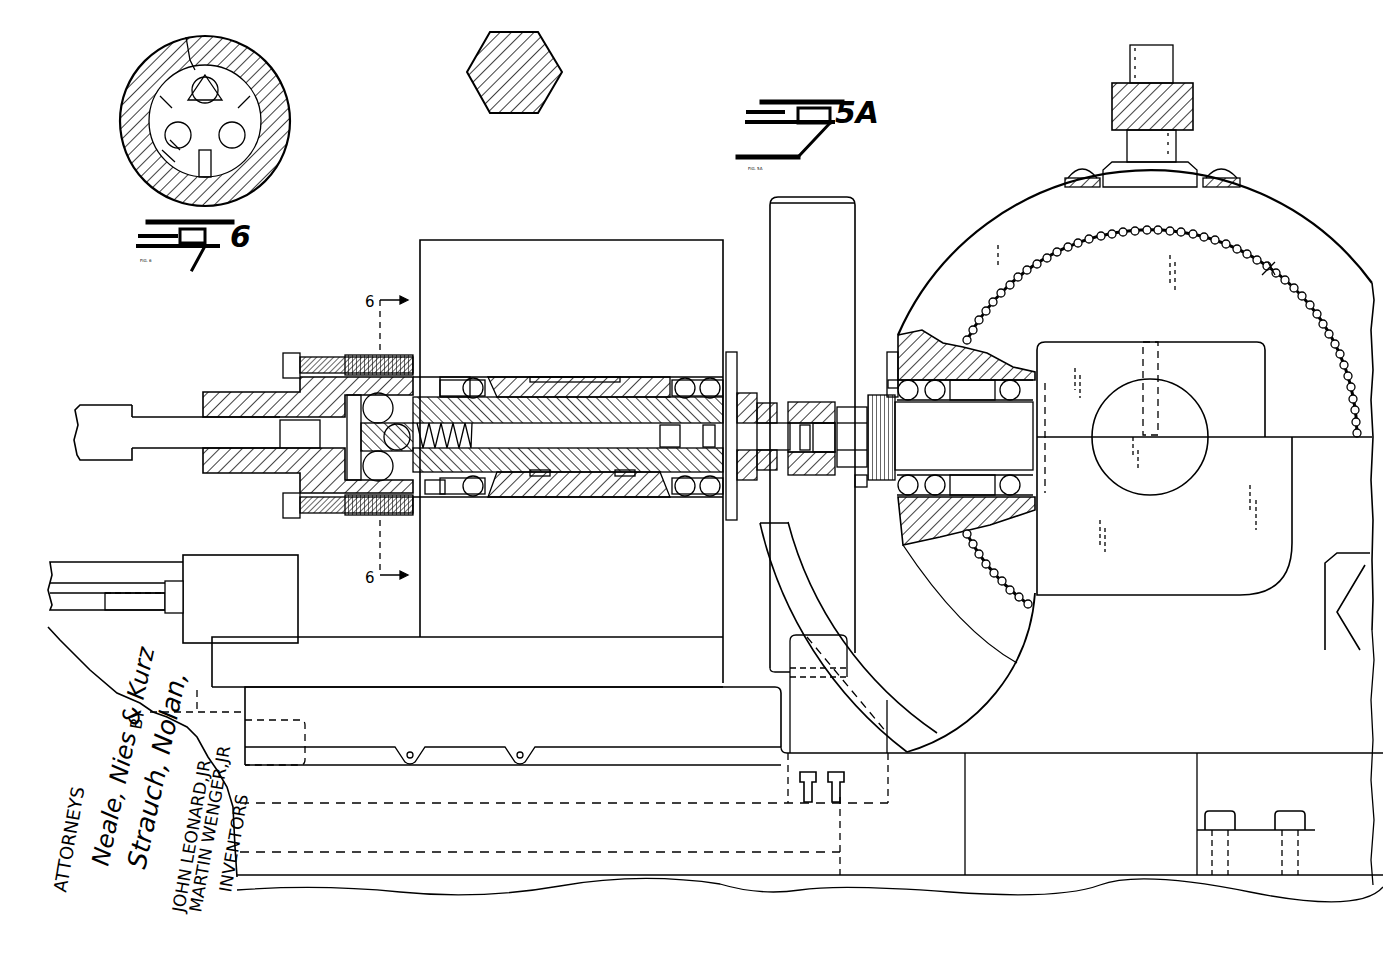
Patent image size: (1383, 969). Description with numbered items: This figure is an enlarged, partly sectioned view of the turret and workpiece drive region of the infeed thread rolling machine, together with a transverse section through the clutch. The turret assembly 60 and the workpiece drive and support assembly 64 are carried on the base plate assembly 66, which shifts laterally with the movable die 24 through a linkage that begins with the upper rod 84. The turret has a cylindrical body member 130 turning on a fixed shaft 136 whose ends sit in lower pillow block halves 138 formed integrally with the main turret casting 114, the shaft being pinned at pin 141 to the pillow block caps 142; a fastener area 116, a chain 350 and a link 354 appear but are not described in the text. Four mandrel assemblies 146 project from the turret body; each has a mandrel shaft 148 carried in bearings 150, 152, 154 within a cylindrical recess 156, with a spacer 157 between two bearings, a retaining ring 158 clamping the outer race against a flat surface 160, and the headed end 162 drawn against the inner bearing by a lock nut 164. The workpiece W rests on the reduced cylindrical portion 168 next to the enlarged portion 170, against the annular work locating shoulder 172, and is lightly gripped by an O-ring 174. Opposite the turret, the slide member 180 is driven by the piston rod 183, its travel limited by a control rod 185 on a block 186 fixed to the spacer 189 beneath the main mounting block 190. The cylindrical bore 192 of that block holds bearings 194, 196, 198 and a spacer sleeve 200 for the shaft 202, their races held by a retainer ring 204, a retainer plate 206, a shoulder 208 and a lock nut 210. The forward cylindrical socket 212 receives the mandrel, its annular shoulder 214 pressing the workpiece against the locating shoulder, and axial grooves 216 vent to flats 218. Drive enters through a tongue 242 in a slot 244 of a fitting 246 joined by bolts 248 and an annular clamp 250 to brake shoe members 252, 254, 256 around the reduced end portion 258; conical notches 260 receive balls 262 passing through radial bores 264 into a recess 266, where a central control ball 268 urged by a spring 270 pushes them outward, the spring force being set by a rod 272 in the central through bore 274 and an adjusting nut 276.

In FIG. 5A, the die 24 is at (843, 197).
In FIG. 5A, the turret assembly 60 is at (945, 265).
In FIG. 5A, the workpiece drive and support assembly 64 is at (480, 240).
In FIG. 5A, the base plate assembly 66 is at (598, 848).
In FIG. 5A, the upper rod 84 is at (548, 48).
In FIG. 5A, the main turret casting 114 is at (983, 706).
In FIG. 5A, the base fastener block 116 is at (1280, 812).
In FIG. 5A, the body member 130 is at (1010, 210).
In FIG. 5A, the fixed shaft 136 is at (1193, 408).
In FIG. 5A, the lower halves of pillow blocks 138 is at (1268, 445).
In FIG. 5A, the pin 141 is at (1158, 350).
In FIG. 5A, the pillow block caps 142 is at (1050, 342).
In FIG. 5A, the work supporting mandrel assemblies 146 is at (878, 395).
In FIG. 5A, the mandrel shaft 148 is at (964, 436).
In FIG. 5A, the outer bearing 150 is at (965, 437).
In FIG. 5A, the bearing 152 is at (948, 400).
In FIG. 5A, the inner bearing 154 is at (1005, 400).
In FIG. 5A, the cylindrical recess 156 is at (975, 515).
In FIG. 5A, the spacer 157 is at (983, 365).
In FIG. 5A, the retaining ring 158 is at (893, 380).
In FIG. 5A, the flat surface 160 is at (890, 352).
In FIG. 5A, the headed end 162 is at (1038, 490).
In FIG. 5A, the lock nut 164 is at (880, 500).
In FIG. 5A, the reduced cylindrical portion 168 is at (822, 478).
In FIG. 5A, the enlarged portion 170 is at (850, 407).
In FIG. 5A, the annular work locating shoulder 172 is at (852, 428).
In FIG. 5A, the O-ring 174 is at (852, 444).
In FIG. 5A, the slide member 180 is at (685, 712).
In FIG. 5A, the piston rod 183 is at (197, 700).
In FIG. 5A, the control rod 185 is at (90, 563).
In FIG. 5A, the block 186 is at (260, 555).
In FIG. 5A, the spacer 189 is at (723, 645).
In FIG. 5A, the main mounting block 190 is at (723, 577).
In FIG. 5A, the cylindrical bore 192 is at (572, 497).
In FIG. 5A, the bearing 194 is at (468, 500).
In FIG. 5A, the bearing 196 is at (680, 498).
In FIG. 5A, the bearing 198 is at (720, 498).
In FIG. 5A, the spacer sleeve 200 is at (636, 498).
In FIG. 5A, the shaft 202 is at (568, 434).
In FIG. 5A, the retainer ring 204 is at (452, 500).
In FIG. 5A, the retainer plate 206 is at (761, 473).
In FIG. 5A, the shoulder 208 is at (463, 435).
In FIG. 5A, the lock nut 210 is at (742, 400).
In FIG. 5A, the cylindrical socket 212 is at (752, 480).
In FIG. 5A, the annular shoulder 214 is at (814, 455).
In FIG. 5A, the axial grooves 216 is at (775, 470).
In FIG. 5A, the flats 218 is at (777, 422).
In FIG. 5A, the workpiece W is at (797, 400).
In FIG. 5A, the tongue 242 is at (186, 412).
In FIG. 5A, the slot 244 is at (258, 430).
In FIG. 5A, the fitting 246 is at (250, 390).
In FIG. 5A, the bolts 248 is at (302, 352).
In FIG. 6, the annular clamp 250 is at (258, 92).
In FIG. 5A, the annular clamp 250 is at (398, 354).
In FIG. 6, the brake shoe member 252 is at (168, 158).
In FIG. 6, the brake shoe member 254 is at (190, 48).
In FIG. 5A, the brake shoe member 254 is at (352, 354).
In FIG. 6, the brake shoe member 256 is at (232, 158).
In FIG. 5A, the reduced end portion 258 is at (340, 528).
In FIG. 6, the conical notches 260 is at (232, 62).
In FIG. 5A, the conical notches 260 is at (398, 512).
In FIG. 6, the balls 262 is at (160, 106).
In FIG. 5A, the radial bores 264 is at (368, 437).
In FIG. 5A, the recess 266 is at (350, 440).
In FIG. 5A, the central control ball 268 is at (399, 437).
In FIG. 5A, the spring 270 is at (440, 378).
In FIG. 5A, the rod 272 is at (615, 435).
In FIG. 5A, the central through bore 274 is at (604, 453).
In FIG. 5A, the adjusting nut 276 is at (675, 436).
In FIG. 5A, the chain 350 is at (1220, 240).
In FIG. 5A, the chain link 354 is at (1272, 268).